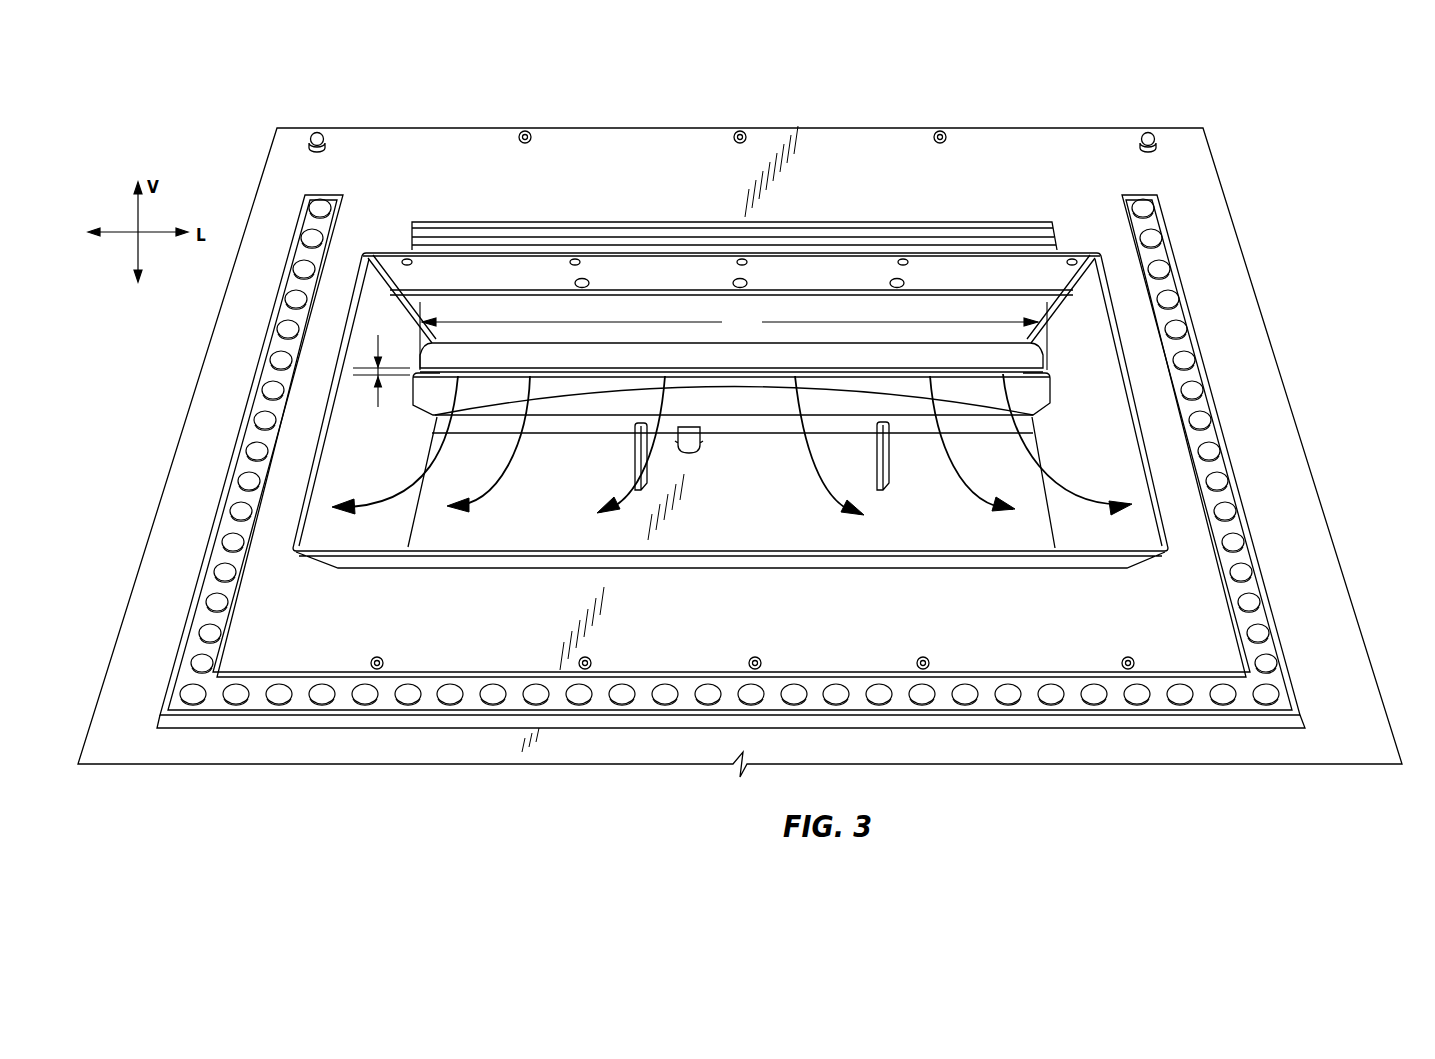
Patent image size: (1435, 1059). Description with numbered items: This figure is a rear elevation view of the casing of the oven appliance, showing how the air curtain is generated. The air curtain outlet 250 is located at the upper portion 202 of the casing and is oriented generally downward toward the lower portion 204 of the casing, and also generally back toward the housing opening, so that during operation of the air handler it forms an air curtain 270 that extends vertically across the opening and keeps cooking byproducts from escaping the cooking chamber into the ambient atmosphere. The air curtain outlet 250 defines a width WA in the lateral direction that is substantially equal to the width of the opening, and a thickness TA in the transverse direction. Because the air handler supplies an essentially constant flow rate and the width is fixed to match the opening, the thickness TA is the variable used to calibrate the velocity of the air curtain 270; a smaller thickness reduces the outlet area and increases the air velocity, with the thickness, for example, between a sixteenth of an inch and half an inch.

The upper portion 202 is at (1033, 162).
The lower portion 204 is at (1067, 750).
The air curtain outlet 250 is at (1025, 375).
The air curtain 270 is at (1057, 488).